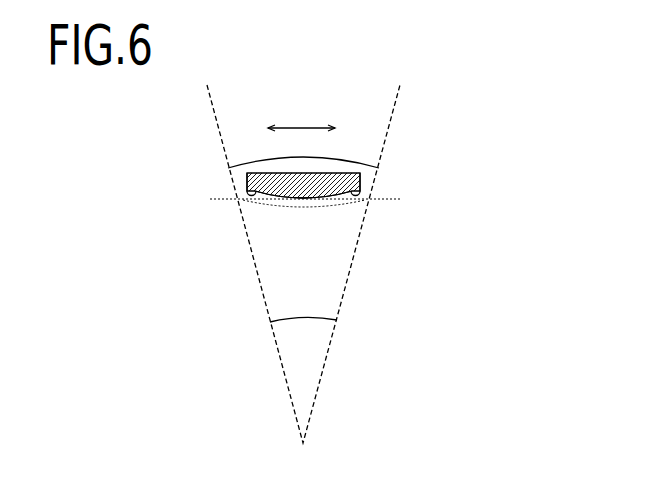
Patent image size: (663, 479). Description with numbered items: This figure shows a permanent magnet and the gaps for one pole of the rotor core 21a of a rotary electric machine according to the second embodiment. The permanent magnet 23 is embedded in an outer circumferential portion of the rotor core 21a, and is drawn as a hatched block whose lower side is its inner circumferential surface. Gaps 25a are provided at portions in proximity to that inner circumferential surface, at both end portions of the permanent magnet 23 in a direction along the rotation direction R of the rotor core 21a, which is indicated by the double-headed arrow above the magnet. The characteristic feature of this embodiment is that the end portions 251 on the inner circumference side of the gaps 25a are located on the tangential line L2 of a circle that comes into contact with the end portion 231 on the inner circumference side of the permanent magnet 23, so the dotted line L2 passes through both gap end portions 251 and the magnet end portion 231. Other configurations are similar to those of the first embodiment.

The permanent magnet 23 is at (258, 174).
The end portion on the inner circumference side of the permanent magnet 231 is at (305, 202).
The end portions on the inner circumference side of the gaps 251 is at (252, 201).
The gaps 25a is at (247, 192).
The rotor core 21a is at (332, 292).
The tangential line L2 is at (320, 200).
The rotation direction R is at (301, 117).